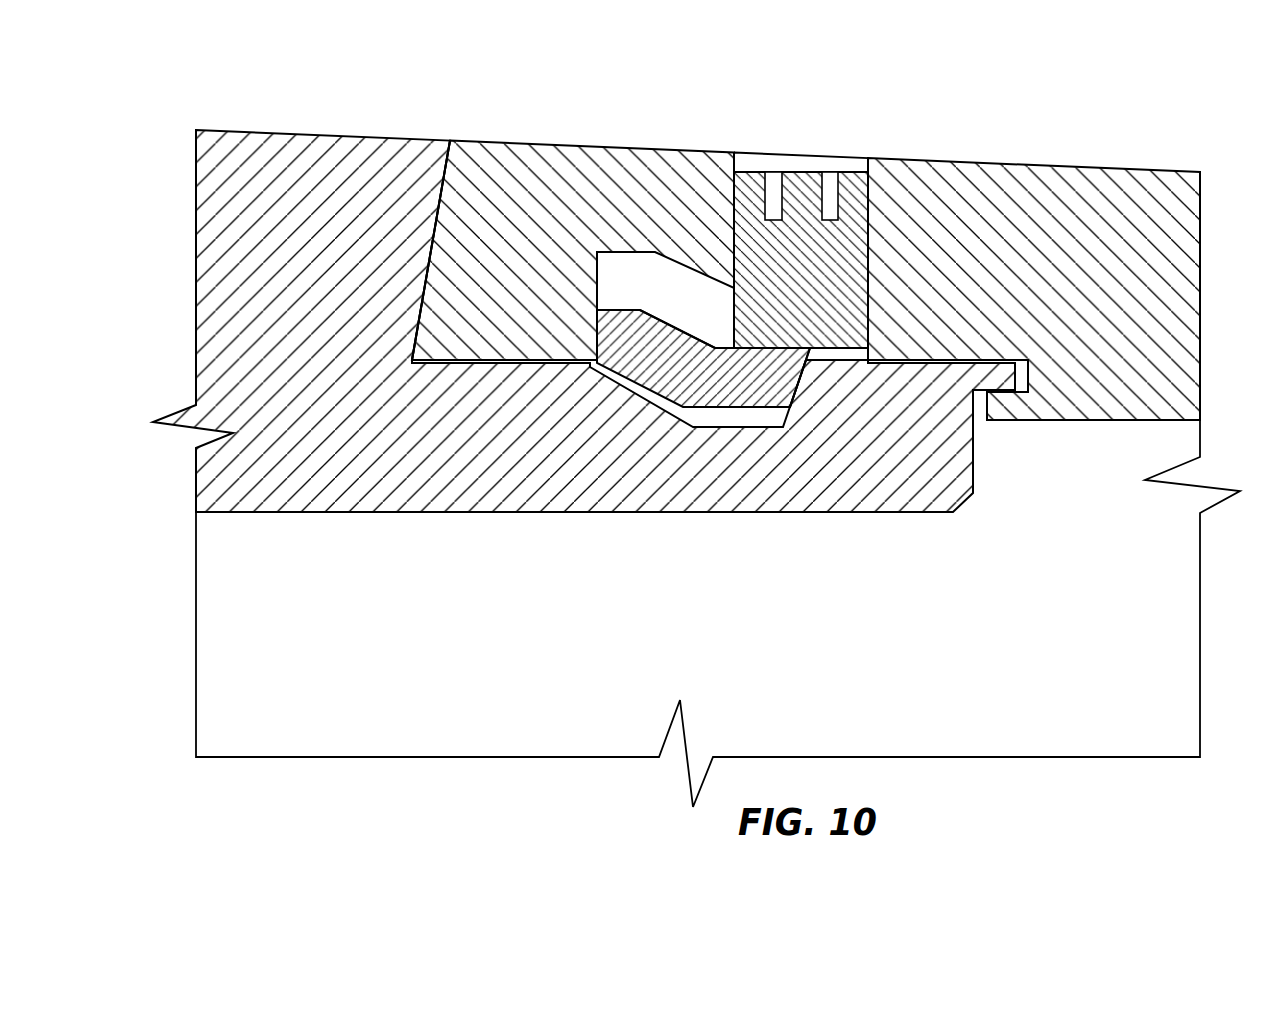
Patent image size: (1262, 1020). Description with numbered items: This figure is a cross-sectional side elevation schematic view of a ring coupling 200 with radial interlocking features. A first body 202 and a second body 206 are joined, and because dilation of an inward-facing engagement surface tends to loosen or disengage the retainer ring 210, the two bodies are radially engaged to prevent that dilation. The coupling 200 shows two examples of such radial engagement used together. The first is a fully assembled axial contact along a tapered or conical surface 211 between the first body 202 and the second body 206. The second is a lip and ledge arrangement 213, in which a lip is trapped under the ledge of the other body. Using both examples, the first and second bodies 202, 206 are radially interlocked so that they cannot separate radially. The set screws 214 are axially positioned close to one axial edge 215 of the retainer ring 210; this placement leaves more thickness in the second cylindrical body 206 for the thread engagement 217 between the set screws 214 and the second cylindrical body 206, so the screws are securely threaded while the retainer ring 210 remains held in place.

The coupling 200 is at (522, 88).
The first body 202 is at (320, 242).
The second body 206 is at (582, 201).
The retainer ring 210 is at (683, 372).
The tapered or conical surface 211 is at (437, 195).
The lip and ledge arrangement 213 is at (1008, 337).
The set screws 214 is at (792, 213).
The axial edge 215 is at (792, 378).
The thread engagement 217 is at (870, 235).